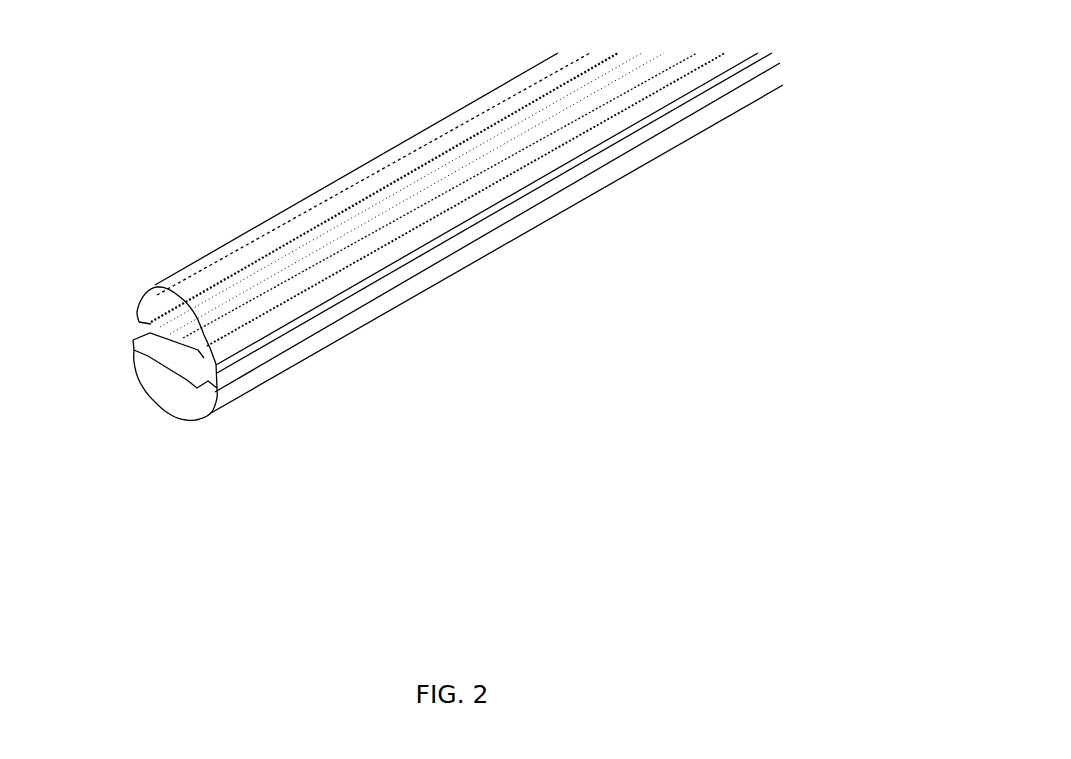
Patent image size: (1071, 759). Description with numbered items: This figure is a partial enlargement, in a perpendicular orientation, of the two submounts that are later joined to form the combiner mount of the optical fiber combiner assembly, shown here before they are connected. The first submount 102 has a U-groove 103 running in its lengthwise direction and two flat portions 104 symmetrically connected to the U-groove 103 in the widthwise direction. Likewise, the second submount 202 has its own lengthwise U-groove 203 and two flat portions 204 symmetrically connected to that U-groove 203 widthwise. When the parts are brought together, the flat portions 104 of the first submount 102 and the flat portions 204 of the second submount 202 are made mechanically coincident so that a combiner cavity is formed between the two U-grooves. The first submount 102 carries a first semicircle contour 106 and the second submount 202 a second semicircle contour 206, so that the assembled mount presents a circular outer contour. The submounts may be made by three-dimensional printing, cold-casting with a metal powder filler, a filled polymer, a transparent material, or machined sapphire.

The first submount 102 is at (505, 255).
The U-groove 103 is at (178, 367).
The flat portions 104 is at (146, 337).
The first semicircle contour 106 is at (183, 423).
The second submount 202 is at (390, 140).
The U-groove 203 is at (203, 383).
The flat portions 204 is at (278, 240).
The second semicircle contour 206 is at (170, 291).